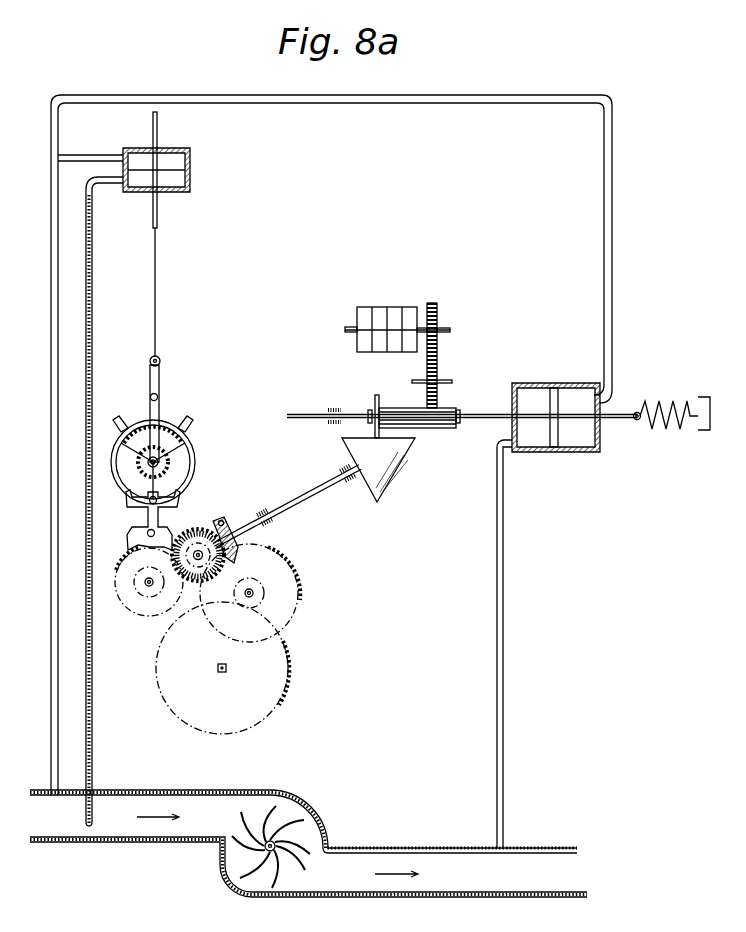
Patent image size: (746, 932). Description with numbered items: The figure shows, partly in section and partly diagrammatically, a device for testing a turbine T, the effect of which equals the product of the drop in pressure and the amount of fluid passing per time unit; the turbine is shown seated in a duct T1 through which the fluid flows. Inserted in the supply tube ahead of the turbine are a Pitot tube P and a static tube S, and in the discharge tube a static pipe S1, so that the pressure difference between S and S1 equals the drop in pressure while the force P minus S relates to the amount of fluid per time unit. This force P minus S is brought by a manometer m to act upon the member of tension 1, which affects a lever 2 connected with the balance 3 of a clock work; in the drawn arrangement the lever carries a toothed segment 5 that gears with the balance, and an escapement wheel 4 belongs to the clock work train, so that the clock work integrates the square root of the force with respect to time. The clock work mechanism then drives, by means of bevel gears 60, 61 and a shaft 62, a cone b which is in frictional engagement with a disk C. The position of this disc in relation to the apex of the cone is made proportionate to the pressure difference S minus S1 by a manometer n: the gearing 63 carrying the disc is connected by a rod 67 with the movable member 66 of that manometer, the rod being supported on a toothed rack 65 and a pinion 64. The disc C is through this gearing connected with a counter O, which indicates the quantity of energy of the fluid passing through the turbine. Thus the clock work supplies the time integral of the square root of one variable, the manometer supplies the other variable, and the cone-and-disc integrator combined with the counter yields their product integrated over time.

The static tube S is at (332, 465).
The static pipe S1 is at (515, 644).
The Pitot tube P is at (104, 501).
The manometer m is at (190, 151).
The member of tension 1 is at (158, 275).
The lever 2 is at (160, 386).
The balance 3 is at (192, 458).
The ratchet wheel 4 is at (200, 515).
The toothed segment 5 is at (190, 426).
The bevel gear 60 is at (221, 521).
The bevel gear 61 is at (221, 527).
The shaft 62 is at (299, 499).
The gearing 63 is at (438, 430).
The pinion 64 is at (438, 370).
The rack 65 is at (438, 306).
The movable member 66 is at (560, 438).
The rod 67 is at (485, 413).
The disk C is at (375, 396).
The counter O is at (386, 306).
The cone b is at (385, 478).
The manometer n is at (532, 383).
The turbine T is at (296, 818).
The duct T1 is at (143, 830).